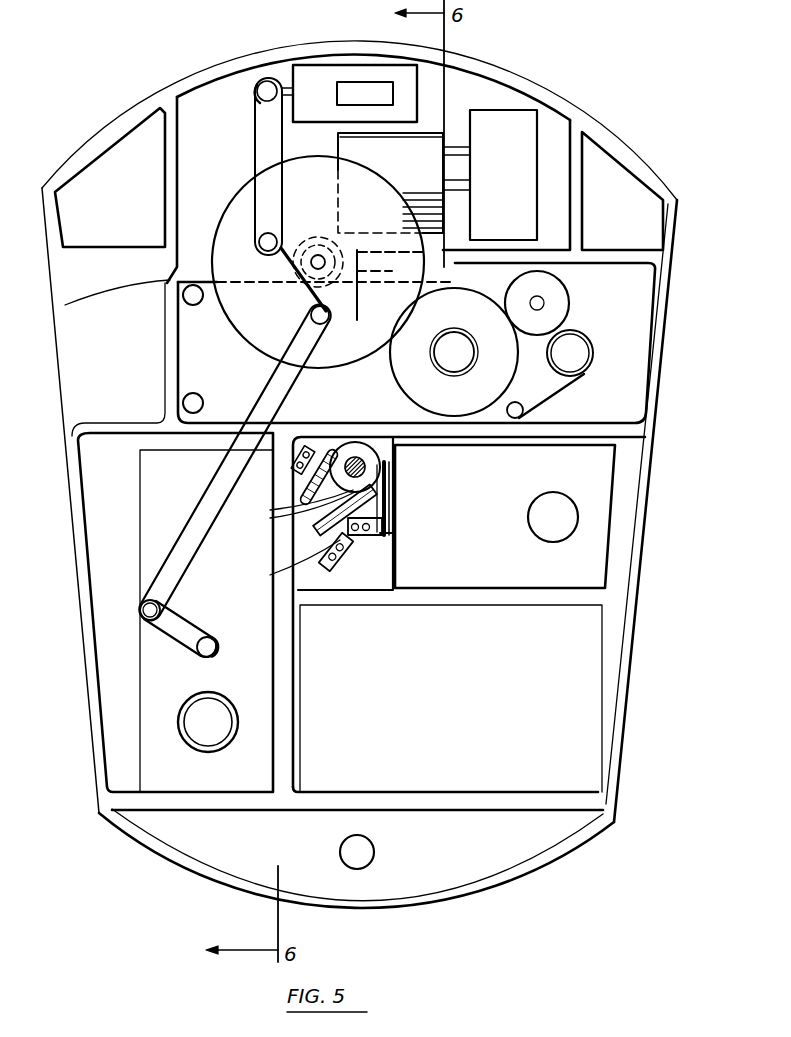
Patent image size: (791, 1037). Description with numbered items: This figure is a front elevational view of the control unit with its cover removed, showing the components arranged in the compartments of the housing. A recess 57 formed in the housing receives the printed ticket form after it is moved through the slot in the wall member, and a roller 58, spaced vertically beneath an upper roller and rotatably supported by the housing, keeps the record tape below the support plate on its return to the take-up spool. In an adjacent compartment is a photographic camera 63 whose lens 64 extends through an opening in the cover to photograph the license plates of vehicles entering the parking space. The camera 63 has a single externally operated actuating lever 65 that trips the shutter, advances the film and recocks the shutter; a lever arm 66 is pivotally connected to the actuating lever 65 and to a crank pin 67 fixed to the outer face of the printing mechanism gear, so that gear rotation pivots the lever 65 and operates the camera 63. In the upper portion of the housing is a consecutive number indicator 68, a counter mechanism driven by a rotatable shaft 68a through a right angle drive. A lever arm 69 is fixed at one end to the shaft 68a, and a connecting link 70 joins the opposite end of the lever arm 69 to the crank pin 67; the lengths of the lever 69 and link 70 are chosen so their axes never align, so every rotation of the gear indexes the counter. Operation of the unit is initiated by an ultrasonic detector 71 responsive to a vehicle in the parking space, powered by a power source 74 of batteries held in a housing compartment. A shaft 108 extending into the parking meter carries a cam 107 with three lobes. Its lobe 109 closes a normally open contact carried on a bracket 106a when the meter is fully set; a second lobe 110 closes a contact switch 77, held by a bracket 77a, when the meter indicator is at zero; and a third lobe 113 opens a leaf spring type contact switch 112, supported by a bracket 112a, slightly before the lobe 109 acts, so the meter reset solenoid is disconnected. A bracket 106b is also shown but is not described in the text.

The recess 57 is at (68, 262).
The roller 58 is at (187, 398).
The photographic camera 63 is at (160, 650).
The lens 64 is at (211, 717).
The actuating lever 65 is at (185, 622).
The lever arm 66 is at (208, 495).
The crank pin 67 is at (329, 321).
The consecutive number indicator 68 is at (337, 72).
The rotatable shaft 68a is at (261, 88).
The lever arm 69 is at (266, 150).
The connecting link 70 is at (318, 262).
The detector 71 is at (604, 522).
The power source 74 is at (588, 683).
The contact switch 77 is at (306, 442).
The bracket 77a is at (305, 503).
The bracket 106a is at (310, 572).
The switch 106b is at (322, 537).
The cam 107 is at (375, 470).
The shaft 108 is at (358, 455).
The lobe 109 is at (315, 528).
The second lobe 110 is at (334, 451).
The leaf spring type contact switch 112 is at (386, 498).
The bracket 112a is at (388, 522).
The third lobe 113 is at (386, 480).